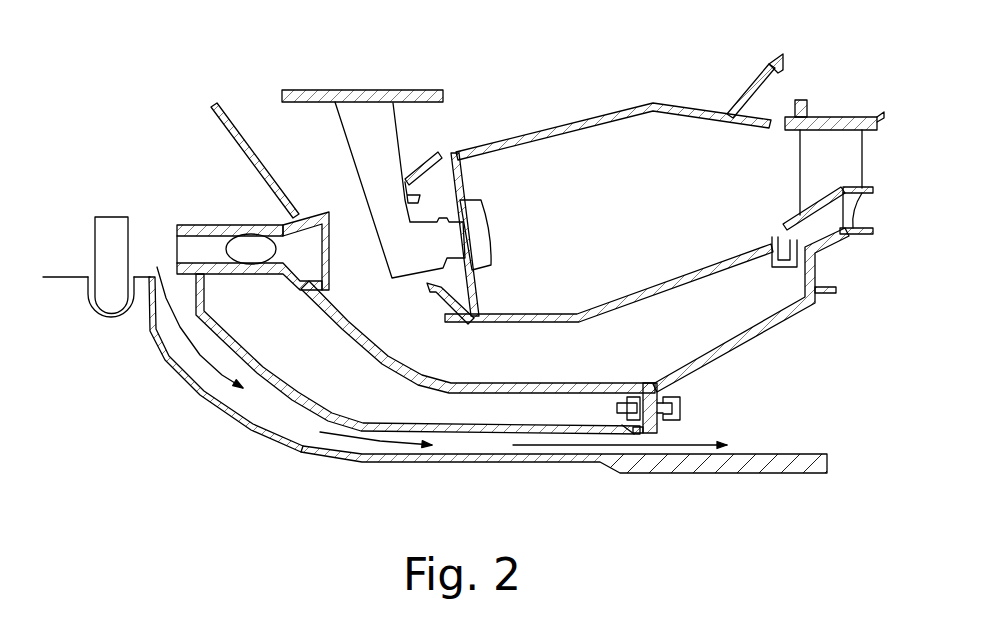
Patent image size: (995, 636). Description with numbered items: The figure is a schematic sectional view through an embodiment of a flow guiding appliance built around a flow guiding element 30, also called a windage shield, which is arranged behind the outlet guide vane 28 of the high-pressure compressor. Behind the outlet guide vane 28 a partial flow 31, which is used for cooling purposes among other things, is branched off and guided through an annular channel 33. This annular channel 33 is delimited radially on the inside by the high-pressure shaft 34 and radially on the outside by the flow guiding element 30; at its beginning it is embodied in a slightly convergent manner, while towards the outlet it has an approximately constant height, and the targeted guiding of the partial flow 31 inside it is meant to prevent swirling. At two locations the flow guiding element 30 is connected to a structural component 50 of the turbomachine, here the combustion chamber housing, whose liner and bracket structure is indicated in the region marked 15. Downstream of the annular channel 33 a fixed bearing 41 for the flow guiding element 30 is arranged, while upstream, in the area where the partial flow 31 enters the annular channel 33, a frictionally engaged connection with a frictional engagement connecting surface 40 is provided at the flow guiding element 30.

The combustion chamber 15 is at (653, 152).
The outlet guide vane 28 is at (111, 231).
The flow guiding element 30 is at (277, 386).
The partial flow 31 is at (190, 346).
The annular channel 33 is at (247, 410).
The high-pressure shaft 34 is at (313, 454).
The frictional engagement connecting surface 40 is at (157, 266).
The fixed bearing 41 is at (638, 428).
The structural component 50 is at (533, 384).